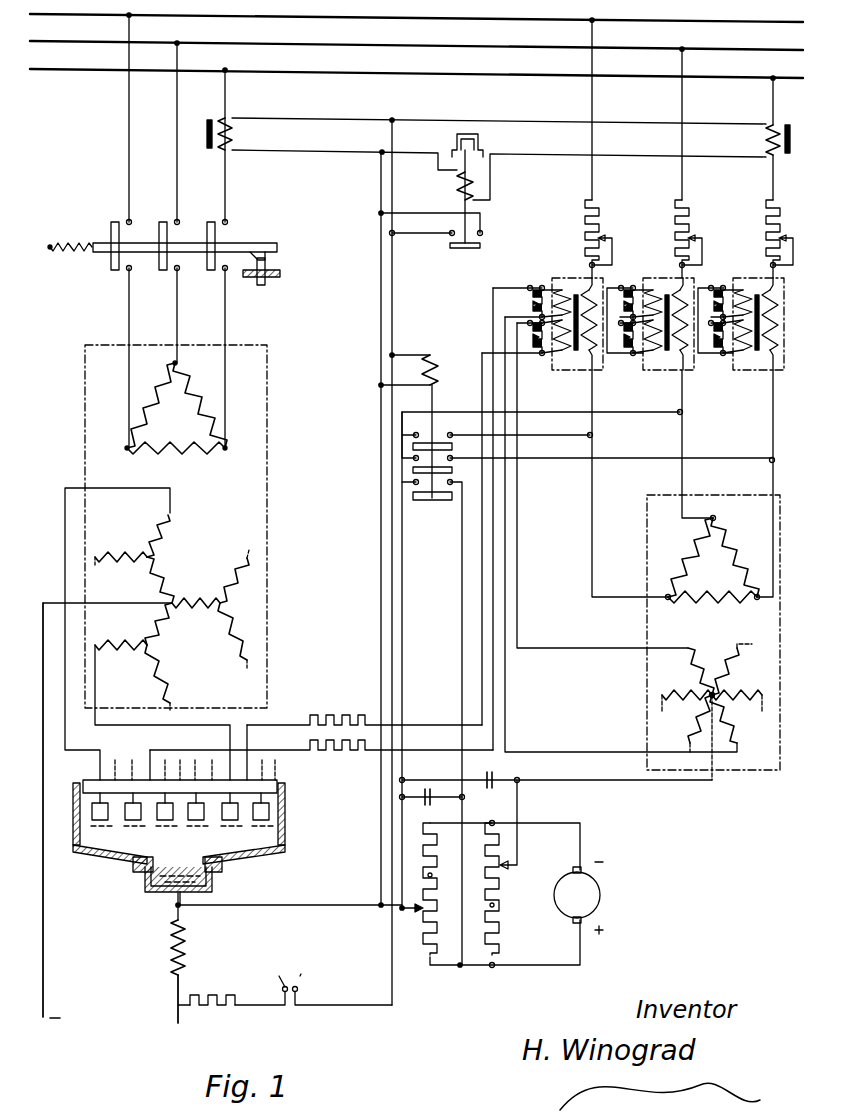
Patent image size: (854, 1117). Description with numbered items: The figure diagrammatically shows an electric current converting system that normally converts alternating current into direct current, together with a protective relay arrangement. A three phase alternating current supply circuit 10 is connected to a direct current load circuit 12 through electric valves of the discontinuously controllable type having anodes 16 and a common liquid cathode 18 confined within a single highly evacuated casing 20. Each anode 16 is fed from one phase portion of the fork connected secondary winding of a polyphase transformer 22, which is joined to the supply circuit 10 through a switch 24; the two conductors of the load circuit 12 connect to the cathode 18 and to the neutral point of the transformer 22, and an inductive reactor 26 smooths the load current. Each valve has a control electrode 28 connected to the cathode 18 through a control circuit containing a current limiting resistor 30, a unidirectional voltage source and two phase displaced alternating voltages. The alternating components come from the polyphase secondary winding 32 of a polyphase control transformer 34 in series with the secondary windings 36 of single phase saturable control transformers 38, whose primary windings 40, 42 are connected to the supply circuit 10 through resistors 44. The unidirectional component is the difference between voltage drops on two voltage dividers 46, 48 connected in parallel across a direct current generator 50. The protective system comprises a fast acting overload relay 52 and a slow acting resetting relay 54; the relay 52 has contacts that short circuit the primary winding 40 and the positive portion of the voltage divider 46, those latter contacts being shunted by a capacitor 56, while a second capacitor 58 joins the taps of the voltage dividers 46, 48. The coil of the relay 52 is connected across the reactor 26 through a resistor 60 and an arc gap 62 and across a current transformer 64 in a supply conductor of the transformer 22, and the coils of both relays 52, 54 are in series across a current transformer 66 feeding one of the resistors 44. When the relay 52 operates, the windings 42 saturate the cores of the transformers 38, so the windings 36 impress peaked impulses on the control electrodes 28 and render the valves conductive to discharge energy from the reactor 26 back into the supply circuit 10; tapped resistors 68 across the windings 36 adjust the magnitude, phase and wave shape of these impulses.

The alternating current supply circuit 10 is at (398, 18).
The direct current load circuit 12 is at (52, 985).
The anodes 16 is at (90, 811).
The common liquid cathode 18 is at (209, 884).
The highly evacuated casing 20 is at (286, 843).
The polyphase transformer 22 is at (267, 500).
The switch 24 is at (108, 262).
The inductive reactor 26 is at (170, 950).
The control electrode 28 is at (135, 826).
The current limiting resistor 30 is at (340, 725).
The polyphase secondary winding 32 is at (688, 728).
The polyphase control transformer 34 is at (765, 770).
The secondary windings 36 is at (566, 290).
The single phase saturable control transformers 38 is at (556, 364).
The primary winding of control transformer 40 is at (728, 540).
The primary windings of saturable transformers 42 is at (576, 350).
The resistors 44 is at (583, 202).
The voltage divider 46 is at (423, 944).
The voltage divider 48 is at (500, 915).
The direct current generator 50 is at (600, 892).
The overload relay 52 is at (440, 368).
The resetting relay 54 is at (462, 190).
The capacitor 56 is at (425, 808).
The second capacitor 58 is at (494, 784).
The resistor 60 is at (222, 1006).
The arc gap 62 is at (289, 975).
The current transformer 64 is at (208, 150).
The current transformer 66 is at (787, 155).
The resistors 68 is at (543, 354).